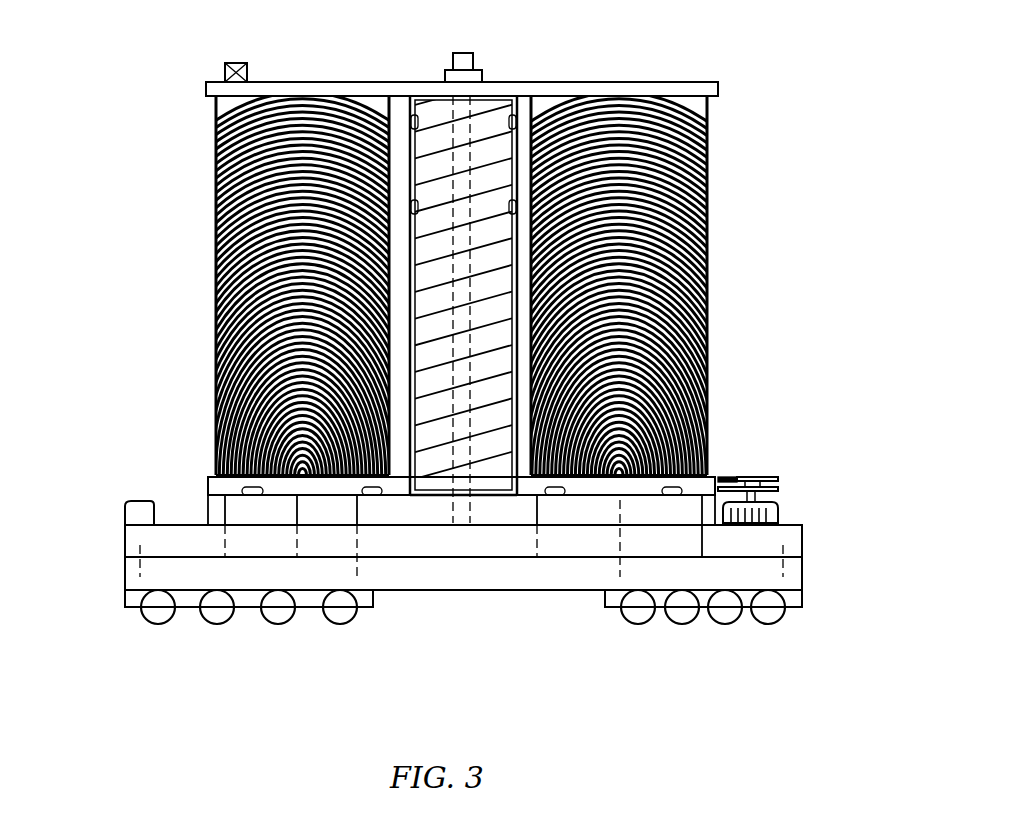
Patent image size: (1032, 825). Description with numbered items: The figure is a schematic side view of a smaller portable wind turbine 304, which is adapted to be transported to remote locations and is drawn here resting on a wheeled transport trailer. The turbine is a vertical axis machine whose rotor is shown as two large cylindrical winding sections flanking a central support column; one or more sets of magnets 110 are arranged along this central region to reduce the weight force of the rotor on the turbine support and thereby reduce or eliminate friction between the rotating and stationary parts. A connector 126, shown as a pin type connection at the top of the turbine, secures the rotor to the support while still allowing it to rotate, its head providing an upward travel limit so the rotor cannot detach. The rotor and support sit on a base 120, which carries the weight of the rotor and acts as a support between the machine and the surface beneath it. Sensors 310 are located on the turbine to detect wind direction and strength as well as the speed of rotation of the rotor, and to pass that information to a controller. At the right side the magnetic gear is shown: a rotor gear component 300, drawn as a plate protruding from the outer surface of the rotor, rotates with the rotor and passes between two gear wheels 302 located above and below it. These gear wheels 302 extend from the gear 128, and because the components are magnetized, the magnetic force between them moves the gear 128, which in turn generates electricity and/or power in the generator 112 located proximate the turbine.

The portable wind turbine 304 is at (692, 45).
The magnets 110 is at (405, 123).
The connector 126 is at (470, 68).
The base 120 is at (124, 557).
The sensors 310 is at (128, 501).
The rotor gear component 300 is at (722, 475).
The gear 128 is at (731, 478).
The gear wheels 302 is at (780, 478).
The generator 112 is at (783, 515).